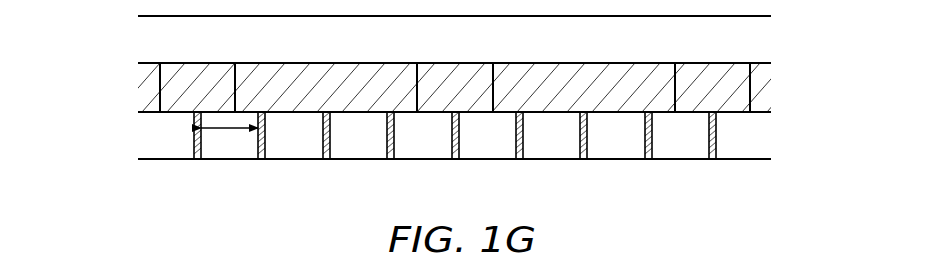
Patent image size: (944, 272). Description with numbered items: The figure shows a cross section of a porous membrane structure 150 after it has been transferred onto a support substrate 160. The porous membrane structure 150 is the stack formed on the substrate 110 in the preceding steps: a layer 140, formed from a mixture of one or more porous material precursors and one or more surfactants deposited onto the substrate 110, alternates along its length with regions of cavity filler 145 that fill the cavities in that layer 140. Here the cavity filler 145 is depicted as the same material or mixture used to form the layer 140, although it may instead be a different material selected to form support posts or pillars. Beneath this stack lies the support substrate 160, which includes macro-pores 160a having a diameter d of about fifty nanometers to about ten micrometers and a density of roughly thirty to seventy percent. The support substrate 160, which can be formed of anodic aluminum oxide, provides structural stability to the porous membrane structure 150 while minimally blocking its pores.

The substrate 110 is at (752, 43).
The porous membrane structure 150 is at (117, 16).
The cavity filler 145 is at (200, 72).
The layer 140 is at (310, 72).
The support substrate 160 is at (748, 134).
The macro-pores 160a is at (210, 160).